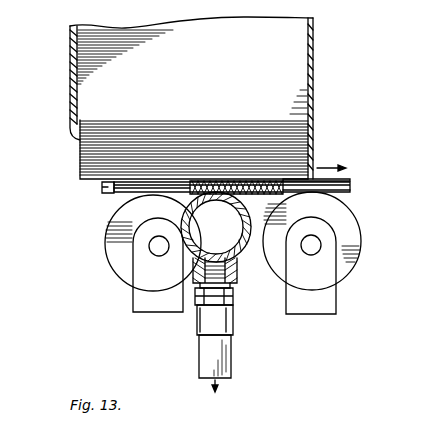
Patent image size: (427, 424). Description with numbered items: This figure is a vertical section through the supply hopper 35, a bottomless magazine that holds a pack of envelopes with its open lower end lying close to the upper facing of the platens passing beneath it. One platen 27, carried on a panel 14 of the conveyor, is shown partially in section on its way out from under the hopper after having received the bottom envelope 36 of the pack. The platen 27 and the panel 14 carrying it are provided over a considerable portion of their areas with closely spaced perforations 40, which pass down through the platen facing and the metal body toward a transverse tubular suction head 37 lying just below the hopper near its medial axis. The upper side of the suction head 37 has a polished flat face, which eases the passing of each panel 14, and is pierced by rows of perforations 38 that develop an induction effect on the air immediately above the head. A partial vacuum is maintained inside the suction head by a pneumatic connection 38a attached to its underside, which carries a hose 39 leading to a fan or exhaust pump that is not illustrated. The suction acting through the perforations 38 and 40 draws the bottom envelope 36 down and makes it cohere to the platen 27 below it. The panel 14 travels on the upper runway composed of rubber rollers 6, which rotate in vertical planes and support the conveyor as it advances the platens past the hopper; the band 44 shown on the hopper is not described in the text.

The supply hopper 35 is at (70, 67).
The corrugated band 44 is at (210, 118).
The platen 27 is at (105, 193).
The panel 14 is at (122, 189).
The bottom envelope 36 is at (138, 186).
The perforations 38 is at (240, 191).
The perforations 40 is at (266, 181).
The suction head 37 is at (193, 237).
The pneumatic connection 38a is at (233, 311).
The hose 39 is at (232, 367).
The rubber rollers 6 is at (118, 268).